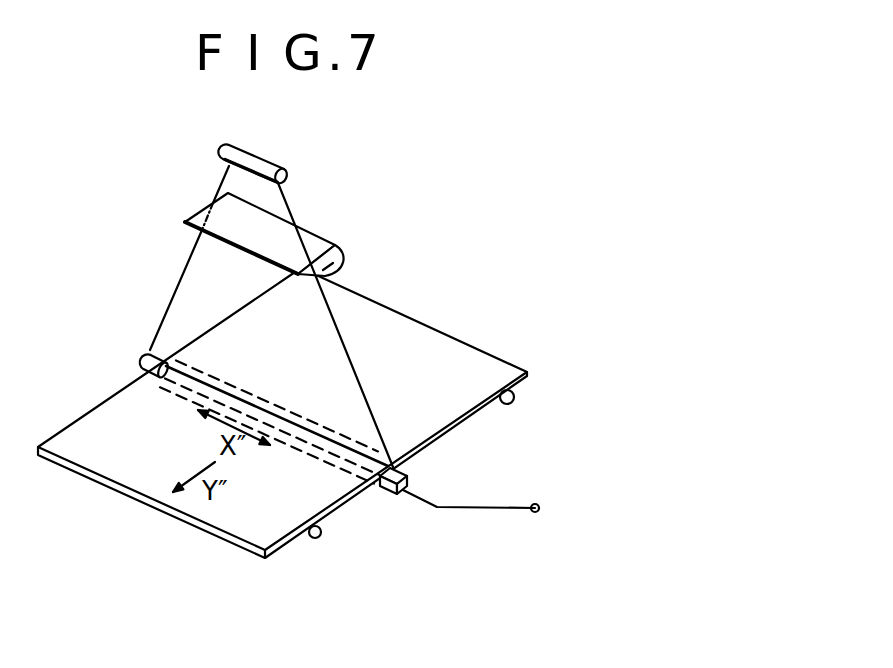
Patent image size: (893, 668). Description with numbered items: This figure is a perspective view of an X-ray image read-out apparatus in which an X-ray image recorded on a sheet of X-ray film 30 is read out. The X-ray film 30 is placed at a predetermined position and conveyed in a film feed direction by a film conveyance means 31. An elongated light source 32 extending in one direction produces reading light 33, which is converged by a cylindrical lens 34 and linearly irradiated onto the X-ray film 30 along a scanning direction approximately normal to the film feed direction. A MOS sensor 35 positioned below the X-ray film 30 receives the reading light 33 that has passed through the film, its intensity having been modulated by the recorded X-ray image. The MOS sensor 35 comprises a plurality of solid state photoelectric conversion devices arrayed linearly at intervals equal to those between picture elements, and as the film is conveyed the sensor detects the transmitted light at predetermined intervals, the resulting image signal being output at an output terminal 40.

The X-ray film 30 is at (495, 355).
The film conveyance means 31 is at (514, 398).
The elongated light source 32 is at (277, 163).
The reading light 33 is at (283, 202).
The cylindrical lens 34 is at (328, 247).
The MOS sensor 35 is at (407, 480).
The output terminal 40 is at (537, 512).